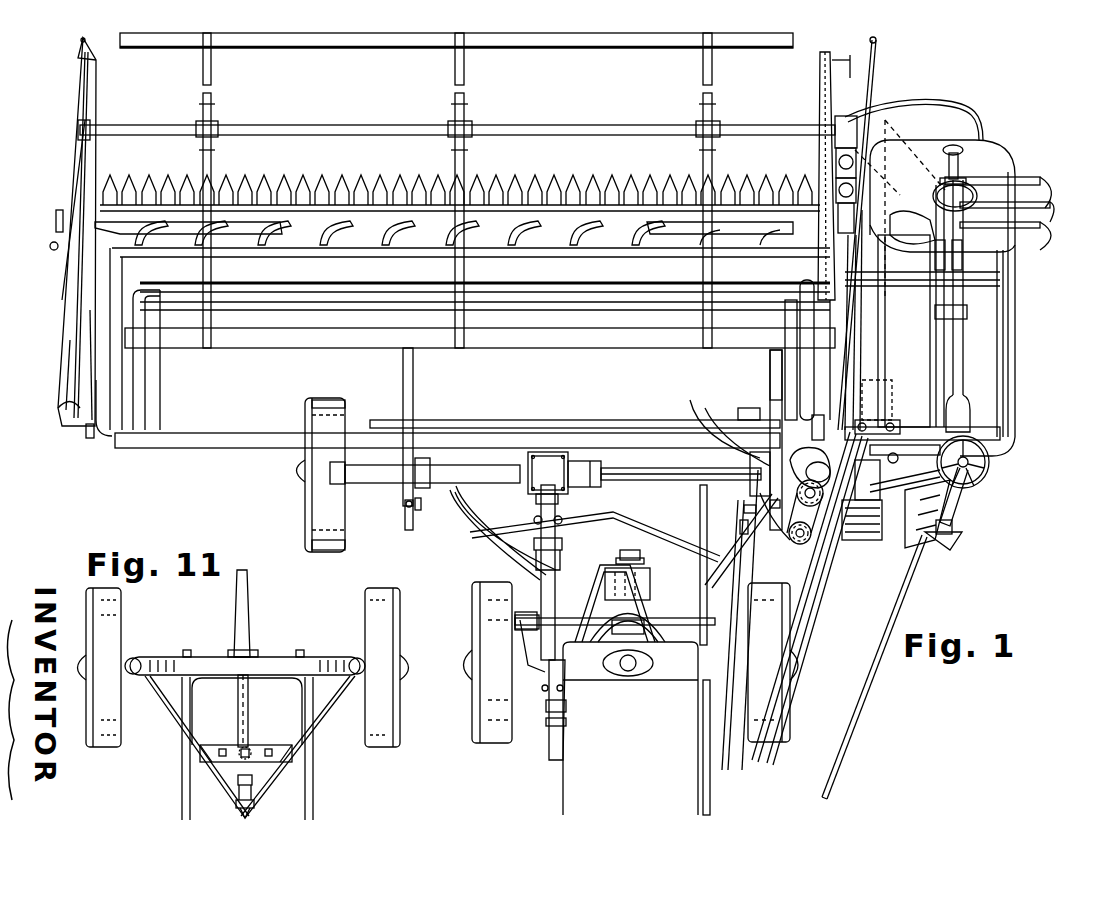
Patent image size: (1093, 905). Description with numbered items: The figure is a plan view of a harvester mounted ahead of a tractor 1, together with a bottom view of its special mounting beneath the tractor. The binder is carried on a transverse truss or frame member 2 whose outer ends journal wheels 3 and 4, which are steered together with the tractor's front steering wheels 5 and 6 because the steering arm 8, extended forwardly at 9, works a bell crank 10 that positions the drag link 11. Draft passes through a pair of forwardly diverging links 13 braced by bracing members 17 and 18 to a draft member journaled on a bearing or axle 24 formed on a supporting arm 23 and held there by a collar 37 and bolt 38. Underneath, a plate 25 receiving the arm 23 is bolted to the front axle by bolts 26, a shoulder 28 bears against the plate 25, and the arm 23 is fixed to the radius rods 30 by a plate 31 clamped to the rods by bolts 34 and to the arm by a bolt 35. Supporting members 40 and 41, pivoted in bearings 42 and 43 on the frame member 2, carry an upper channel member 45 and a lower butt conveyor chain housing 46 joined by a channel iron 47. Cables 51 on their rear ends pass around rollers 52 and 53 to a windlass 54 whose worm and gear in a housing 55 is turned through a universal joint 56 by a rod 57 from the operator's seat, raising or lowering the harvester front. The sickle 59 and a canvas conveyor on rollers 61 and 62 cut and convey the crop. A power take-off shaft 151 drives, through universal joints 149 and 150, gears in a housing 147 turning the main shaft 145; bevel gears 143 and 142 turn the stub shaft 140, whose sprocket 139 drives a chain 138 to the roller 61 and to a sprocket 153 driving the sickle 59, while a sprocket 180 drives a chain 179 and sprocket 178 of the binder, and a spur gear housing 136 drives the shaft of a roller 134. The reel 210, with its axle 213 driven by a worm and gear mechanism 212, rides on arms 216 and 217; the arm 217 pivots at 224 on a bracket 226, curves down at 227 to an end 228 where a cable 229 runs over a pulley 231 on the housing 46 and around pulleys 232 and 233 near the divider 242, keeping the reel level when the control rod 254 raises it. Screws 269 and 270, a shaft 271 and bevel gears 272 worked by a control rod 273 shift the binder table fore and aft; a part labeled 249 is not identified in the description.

In FIG. 1, the tractor 1 is at (578, 780).
In FIG. 1, the truss or frame member 2 is at (496, 474).
In FIG. 1, the wheel 3 is at (852, 306).
In FIG. 1, the wheel 4 is at (320, 552).
In FIG. 1, the front steering wheel 5 is at (754, 680).
In FIG. 1, the front steering wheel 6 is at (510, 602).
In FIG. 1, the steering arm 8 is at (712, 790).
In FIG. 1, the forward extension of steering arm 9 is at (708, 594).
In FIG. 1, the bell crank 10 is at (692, 420).
In FIG. 1, the drag link 11 is at (594, 422).
In FIG. 1, the links 13 is at (520, 565).
In FIG. 1, the bracing member 17 is at (610, 518).
In FIG. 1, the bracing member 18 is at (604, 585).
In FIG. 11, the supporting arm 23 is at (240, 688).
In FIG. 11, the bearing or axle 24 is at (250, 580).
In FIG. 11, the plate 25 is at (213, 654).
In FIG. 11, the bolts 26 is at (183, 650).
In FIG. 11, the shoulder 28 is at (252, 650).
In FIG. 11, the radius rods 30 is at (180, 722).
In FIG. 11, the plate 31 is at (214, 762).
In FIG. 11, the bolts 34 is at (222, 749).
In FIG. 11, the bolt 35 is at (240, 775).
In FIG. 1, the collar 37 is at (647, 566).
In FIG. 1, the bolt 38 is at (622, 554).
In FIG. 1, the supporting member 40 is at (792, 375).
In FIG. 1, the supporting member 41 is at (414, 395).
In FIG. 1, the bearing 42 is at (750, 468).
In FIG. 1, the bearing 43 is at (432, 468).
In FIG. 1, the channel member 45 is at (222, 448).
In FIG. 1, the butt conveyor chain housing 46 is at (560, 243).
In FIG. 1, the channel iron 47 is at (135, 392).
In FIG. 1, the cables 51 is at (405, 516).
In FIG. 1, the roller 52 is at (772, 506).
In FIG. 1, the roller 53 is at (421, 506).
In FIG. 1, the windlass or hoist 54 is at (752, 514).
In FIG. 1, the housing 55 is at (736, 530).
In FIG. 1, the universal joint 56 is at (746, 536).
In FIG. 1, the rod 57 is at (744, 750).
In FIG. 1, the sickle 59 is at (526, 192).
In FIG. 1, the roller 61 is at (770, 380).
In FIG. 1, the roller 62 is at (140, 406).
In FIG. 1, the roller 134 is at (830, 352).
In FIG. 1, the housing 136 is at (812, 452).
In FIG. 1, the chain 138 is at (820, 572).
In FIG. 1, the sprocket 139 is at (800, 525).
In FIG. 1, the stub shaft 140 is at (798, 545).
In FIG. 1, the bevel gear 142 is at (748, 430).
In FIG. 1, the bevel gear 143 is at (740, 418).
In FIG. 1, the main drive shaft 145 is at (676, 470).
In FIG. 1, the housing 147 is at (548, 452).
In FIG. 1, the universal joint 149 is at (548, 682).
In FIG. 1, the universal joint 150 is at (538, 546).
In FIG. 1, the power take-off shaft 151 is at (553, 744).
In FIG. 1, the sprocket 153 is at (890, 396).
In FIG. 1, the sprocket 178 is at (915, 514).
In FIG. 1, the chain 179 is at (870, 530).
In FIG. 1, the sprocket 180 is at (860, 528).
In FIG. 1, the reel 210 is at (398, 38).
In FIG. 1, the worm and gear mechanism 212 is at (835, 134).
In FIG. 1, the axle 213 is at (576, 132).
In FIG. 1, the arm 216 is at (878, 195).
In FIG. 1, the arm 217 is at (80, 280).
In FIG. 1, the pivot 224 is at (90, 322).
In FIG. 1, the bracket 226 is at (105, 445).
In FIG. 1, the curved portion 227 is at (84, 427).
In FIG. 1, the extreme end 228 is at (86, 440).
In FIG. 1, the cable 229 is at (70, 380).
In FIG. 1, the pulley 231 is at (54, 246).
In FIG. 1, the pulley 232 is at (882, 210).
In FIG. 1, the pulley 233 is at (880, 142).
In FIG. 1, the divider 242 is at (820, 108).
In FIG. 1, the knob 249 is at (945, 152).
In FIG. 1, the control rod 254 is at (808, 596).
In FIG. 1, the screw 269 is at (940, 396).
In FIG. 1, the screw 270 is at (930, 425).
In FIG. 1, the shaft 271 is at (905, 458).
In FIG. 1, the bevel gears 272 is at (905, 482).
In FIG. 1, the control rod 273 is at (862, 702).